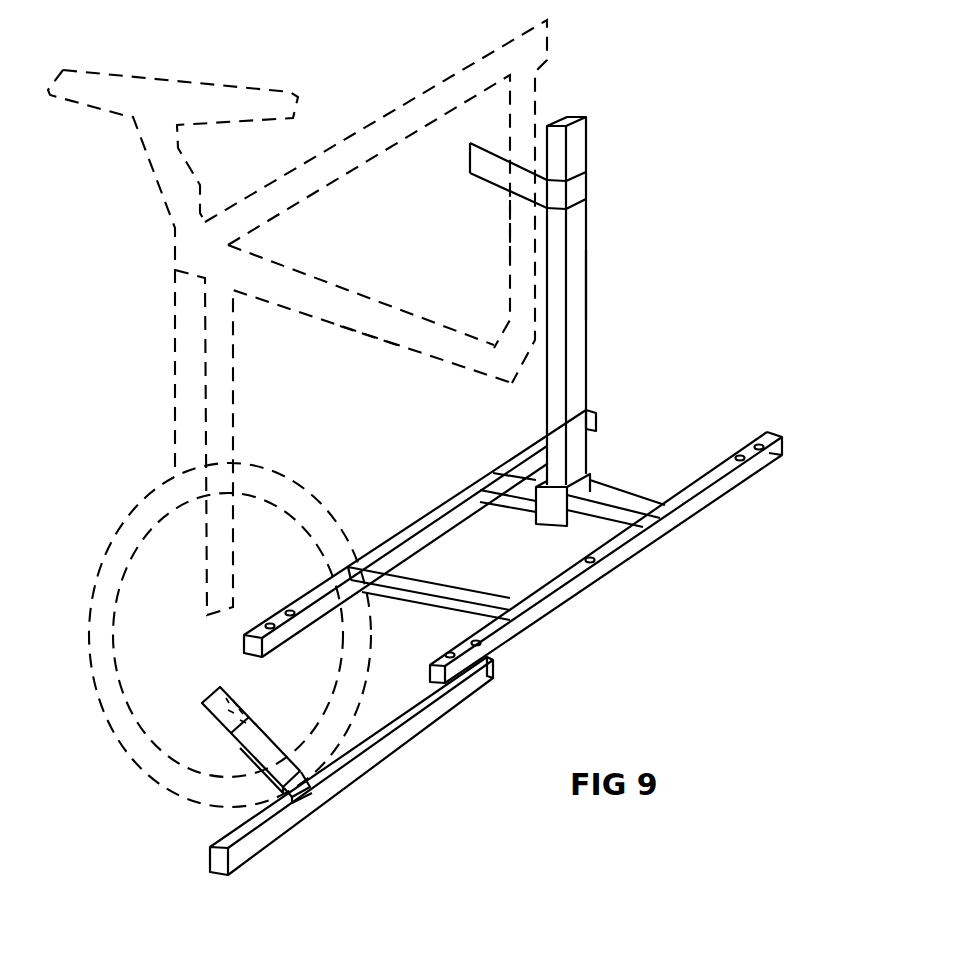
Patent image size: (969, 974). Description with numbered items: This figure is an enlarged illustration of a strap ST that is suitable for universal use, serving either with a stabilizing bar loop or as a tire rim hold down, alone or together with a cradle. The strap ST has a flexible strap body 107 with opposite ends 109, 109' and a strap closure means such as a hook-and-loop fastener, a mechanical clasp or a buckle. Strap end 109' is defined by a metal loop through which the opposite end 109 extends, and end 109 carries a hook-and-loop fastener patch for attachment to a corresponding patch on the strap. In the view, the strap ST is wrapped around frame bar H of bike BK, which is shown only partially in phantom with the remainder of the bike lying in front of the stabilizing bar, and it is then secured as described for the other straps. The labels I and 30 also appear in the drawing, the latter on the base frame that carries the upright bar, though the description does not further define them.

The bike BK is at (425, 97).
The frame bar H is at (520, 230).
The frame down tube I is at (378, 323).
The base frame 30 is at (568, 590).
The strap ST is at (578, 187).
The flexible strap body 107 is at (513, 173).
The strap end 109 is at (224, 721).
The strap end 109' is at (234, 860).